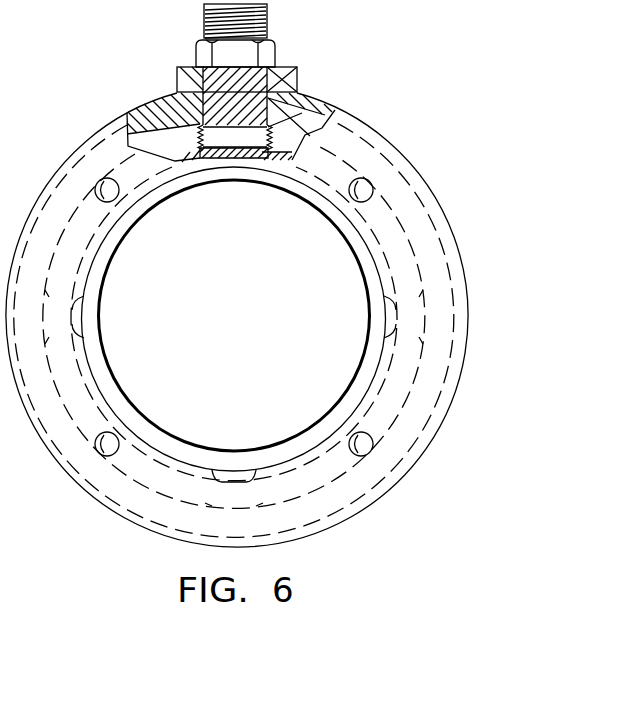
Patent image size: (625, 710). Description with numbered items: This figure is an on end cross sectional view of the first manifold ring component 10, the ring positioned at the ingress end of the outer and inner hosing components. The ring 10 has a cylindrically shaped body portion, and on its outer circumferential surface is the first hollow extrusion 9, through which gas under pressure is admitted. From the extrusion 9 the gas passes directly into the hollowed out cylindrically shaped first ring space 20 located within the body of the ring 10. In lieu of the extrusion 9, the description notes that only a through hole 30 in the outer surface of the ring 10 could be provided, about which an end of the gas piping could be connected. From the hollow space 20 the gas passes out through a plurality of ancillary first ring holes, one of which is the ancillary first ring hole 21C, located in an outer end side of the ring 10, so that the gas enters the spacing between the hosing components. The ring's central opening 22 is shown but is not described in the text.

The first hollow extrusion 9 is at (268, 23).
The first manifold ring component 10 is at (372, 125).
The first ring space 20 is at (173, 142).
The ancillary first ring hole 21C is at (357, 443).
The bore 22 is at (243, 323).
The through hole 30 is at (247, 84).